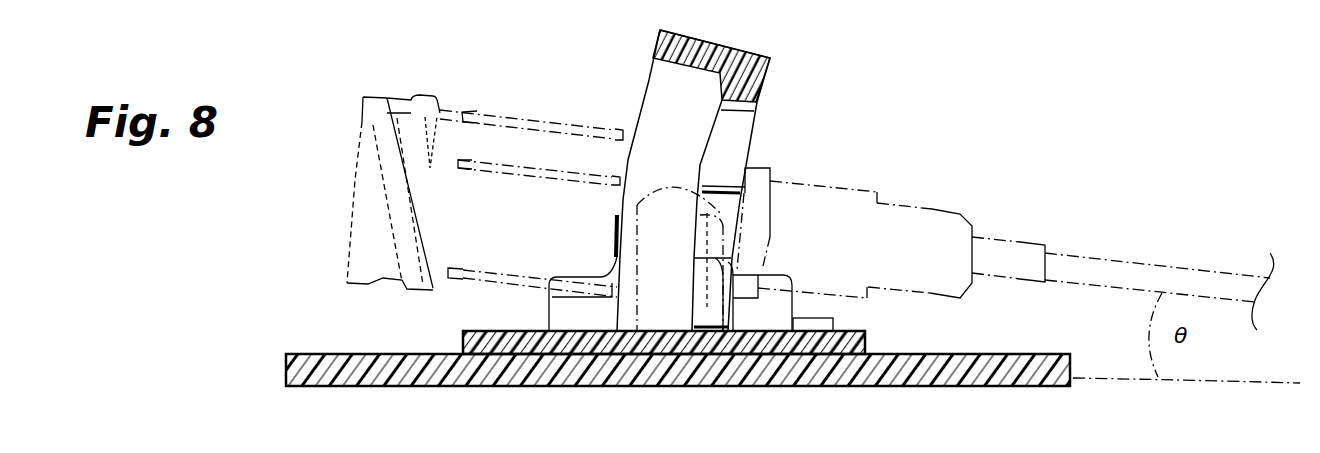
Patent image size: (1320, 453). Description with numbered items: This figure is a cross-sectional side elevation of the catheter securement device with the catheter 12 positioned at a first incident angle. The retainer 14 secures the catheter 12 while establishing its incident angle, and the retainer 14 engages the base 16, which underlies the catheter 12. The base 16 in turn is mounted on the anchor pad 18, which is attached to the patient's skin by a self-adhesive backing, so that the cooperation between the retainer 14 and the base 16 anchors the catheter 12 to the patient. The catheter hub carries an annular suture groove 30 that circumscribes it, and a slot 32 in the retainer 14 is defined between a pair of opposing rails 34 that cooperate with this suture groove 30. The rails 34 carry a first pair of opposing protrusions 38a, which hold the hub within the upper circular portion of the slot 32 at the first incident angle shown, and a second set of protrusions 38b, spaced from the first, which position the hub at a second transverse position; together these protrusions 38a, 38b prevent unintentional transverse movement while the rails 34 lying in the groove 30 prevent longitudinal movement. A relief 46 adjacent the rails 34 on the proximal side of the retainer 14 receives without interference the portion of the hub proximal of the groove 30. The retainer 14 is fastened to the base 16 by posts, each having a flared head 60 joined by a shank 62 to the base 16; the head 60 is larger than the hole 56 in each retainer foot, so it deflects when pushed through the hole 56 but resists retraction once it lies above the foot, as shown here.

The catheter 12 is at (931, 209).
The retainer 14 is at (700, 220).
The base 16 is at (845, 356).
The anchor pad 18 is at (1029, 377).
The annular suture groove 30 is at (697, 180).
The slot 32 is at (740, 140).
The rails 34 is at (752, 114).
The first pair of opposing protrusions 38a is at (724, 186).
The second set of protrusions 38b is at (713, 357).
The relief 46 is at (676, 96).
The hole 56 is at (637, 318).
The head 60 is at (650, 195).
The shank 62 is at (612, 240).